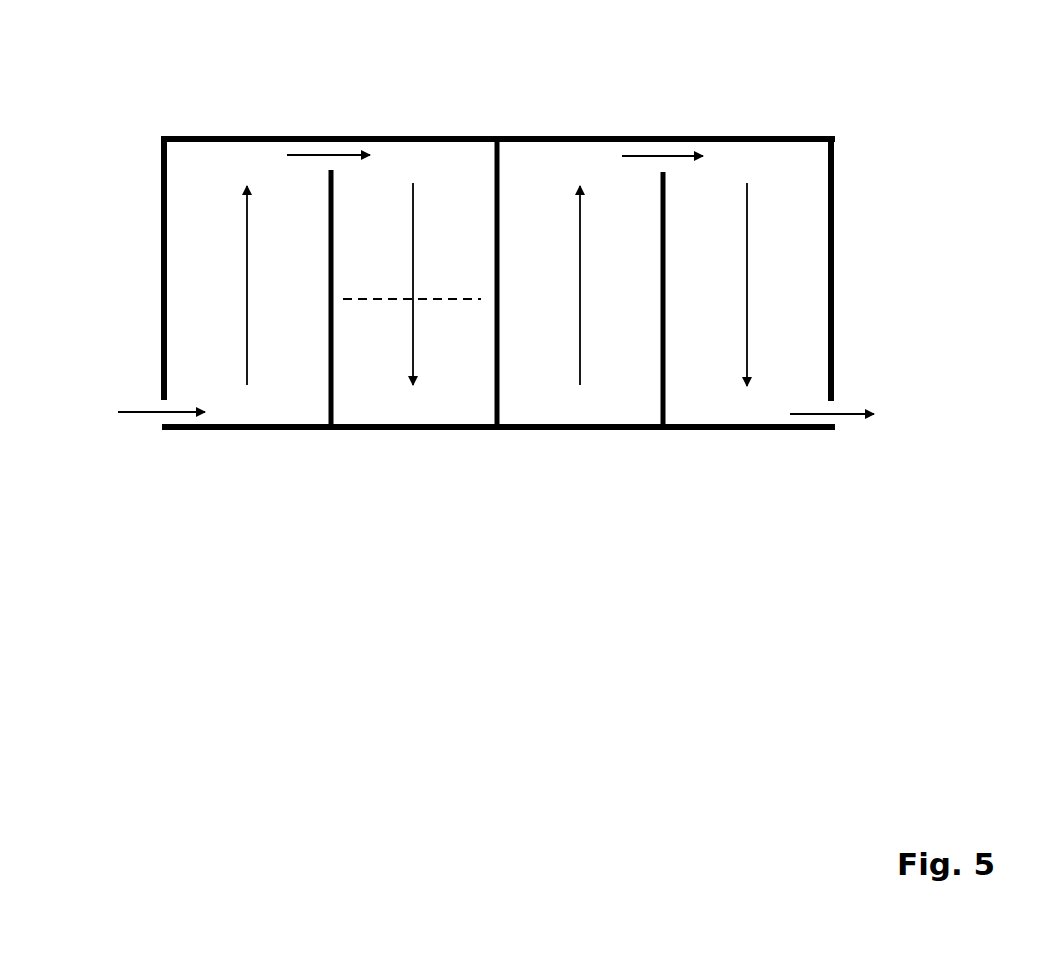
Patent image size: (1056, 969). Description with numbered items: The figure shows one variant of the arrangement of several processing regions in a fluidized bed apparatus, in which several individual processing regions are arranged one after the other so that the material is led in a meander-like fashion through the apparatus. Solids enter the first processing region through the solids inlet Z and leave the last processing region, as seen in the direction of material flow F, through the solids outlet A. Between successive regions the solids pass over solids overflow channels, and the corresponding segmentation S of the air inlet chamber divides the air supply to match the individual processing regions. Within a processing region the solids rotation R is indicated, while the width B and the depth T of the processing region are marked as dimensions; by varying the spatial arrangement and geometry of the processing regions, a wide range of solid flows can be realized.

The depth of the processing region T is at (942, 143).
The segmentation of the air inlet chamber S is at (497, 180).
The direction of material flow F is at (413, 242).
The solids rotation R is at (440, 299).
The width of the processing region B is at (832, 100).
The solids inlet Z is at (134, 412).
The solids outlet A is at (860, 413).